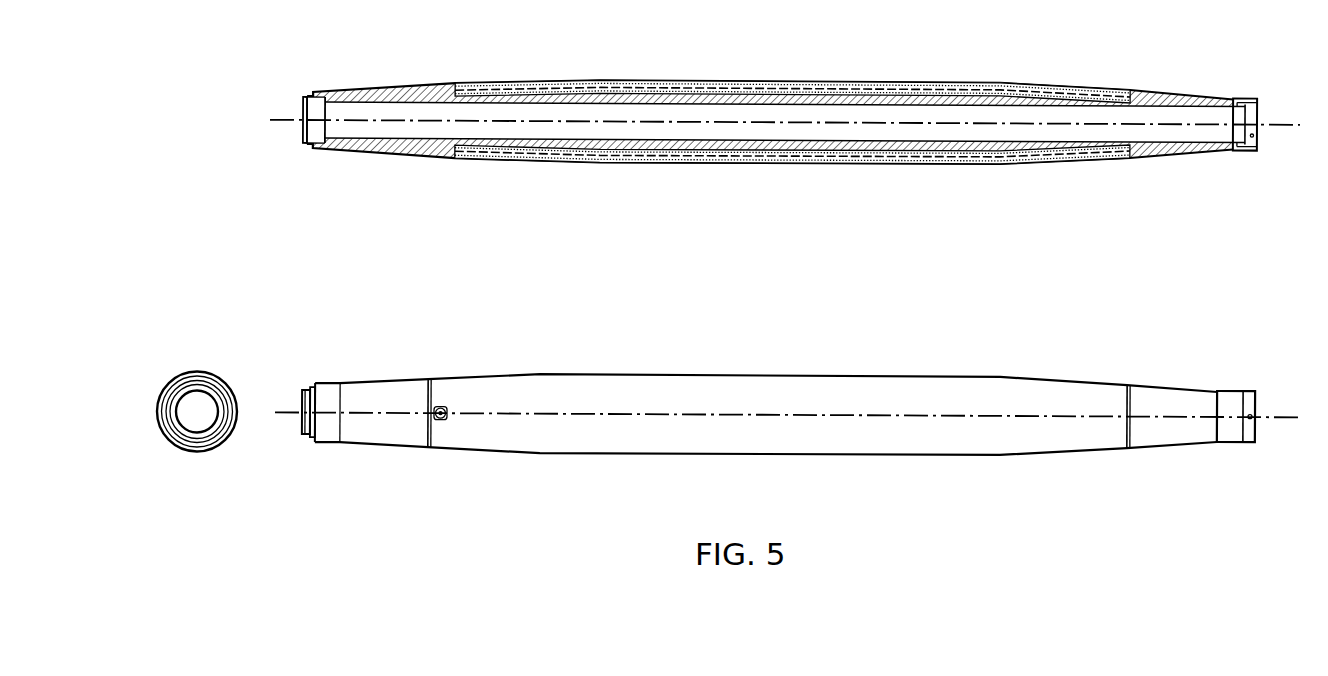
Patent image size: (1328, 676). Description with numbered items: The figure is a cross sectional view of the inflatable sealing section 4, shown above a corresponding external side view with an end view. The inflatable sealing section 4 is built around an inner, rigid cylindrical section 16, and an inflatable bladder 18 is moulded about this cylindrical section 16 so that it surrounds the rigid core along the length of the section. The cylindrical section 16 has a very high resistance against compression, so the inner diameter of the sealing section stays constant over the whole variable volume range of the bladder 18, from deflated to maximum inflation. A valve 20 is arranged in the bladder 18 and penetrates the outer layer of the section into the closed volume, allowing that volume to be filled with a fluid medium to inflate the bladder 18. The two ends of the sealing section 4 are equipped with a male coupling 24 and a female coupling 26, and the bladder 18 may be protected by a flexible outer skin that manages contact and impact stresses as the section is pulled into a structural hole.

The inflatable sealing section 4 is at (603, 80).
The inner rigid cylindrical section 16 is at (427, 112).
The inflatable bladder 18 is at (720, 82).
The valve 20 is at (441, 406).
The male coupling 24 is at (307, 390).
The female coupling 26 is at (1245, 391).